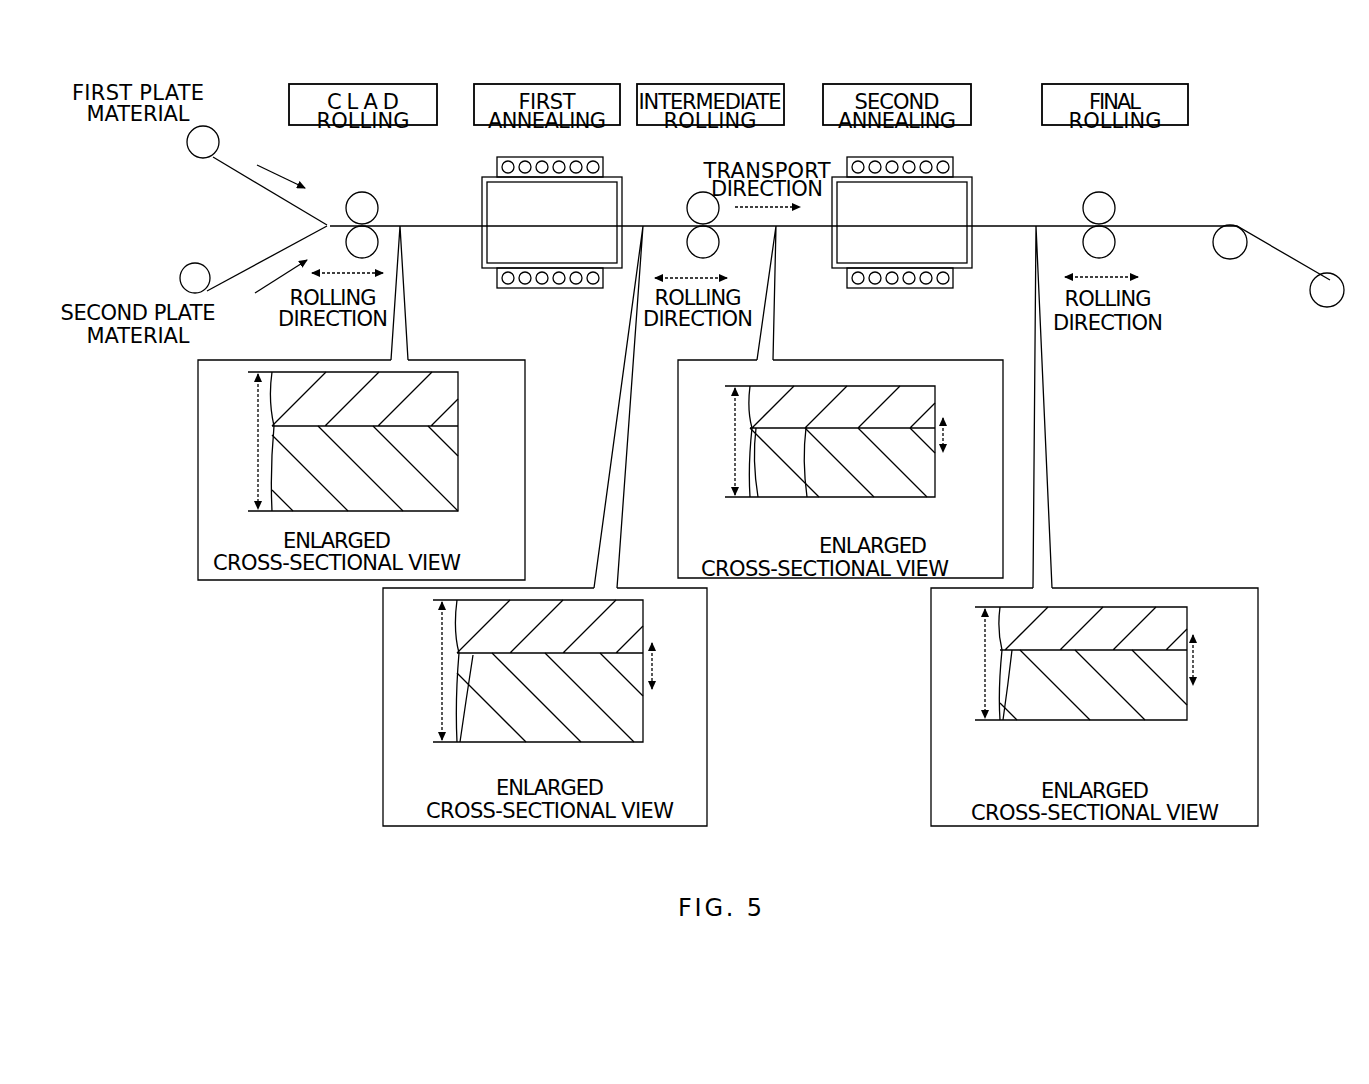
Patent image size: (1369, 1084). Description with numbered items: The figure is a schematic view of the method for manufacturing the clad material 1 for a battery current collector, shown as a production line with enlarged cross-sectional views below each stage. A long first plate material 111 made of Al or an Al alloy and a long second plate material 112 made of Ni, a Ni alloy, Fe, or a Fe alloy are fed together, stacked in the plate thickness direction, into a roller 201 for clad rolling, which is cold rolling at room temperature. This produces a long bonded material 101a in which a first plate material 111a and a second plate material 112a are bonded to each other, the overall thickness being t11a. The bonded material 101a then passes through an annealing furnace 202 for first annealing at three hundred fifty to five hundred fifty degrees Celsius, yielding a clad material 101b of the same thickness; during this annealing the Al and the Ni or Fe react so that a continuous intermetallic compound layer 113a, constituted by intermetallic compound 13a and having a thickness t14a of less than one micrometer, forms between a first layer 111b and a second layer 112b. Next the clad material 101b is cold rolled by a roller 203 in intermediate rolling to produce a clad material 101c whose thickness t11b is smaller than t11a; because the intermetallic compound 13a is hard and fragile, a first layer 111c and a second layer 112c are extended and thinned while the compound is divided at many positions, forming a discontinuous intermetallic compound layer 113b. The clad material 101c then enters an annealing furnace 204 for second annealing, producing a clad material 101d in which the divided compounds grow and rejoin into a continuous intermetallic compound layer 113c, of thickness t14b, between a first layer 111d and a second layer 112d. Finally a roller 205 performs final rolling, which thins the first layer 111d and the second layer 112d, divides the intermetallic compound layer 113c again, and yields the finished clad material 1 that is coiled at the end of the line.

The clad material 1 is at (1157, 227).
The first plate material 111 is at (243, 182).
The second plate material 112 is at (249, 272).
The roller 201 is at (355, 185).
The annealing furnace 202 is at (478, 184).
The roller 203 is at (697, 185).
The annealing furnace 204 is at (972, 167).
The roller 205 is at (1117, 187).
The bonded material 101a is at (383, 466).
The first plate material 111a is at (462, 405).
The second plate material 112a is at (461, 458).
The clad material 101b is at (548, 696).
The first layer 111b is at (647, 628).
The second layer 112b is at (647, 700).
The intermetallic compound layer 113a is at (461, 742).
The intermetallic compound 13a is at (758, 497).
The clad material 101c is at (863, 473).
The first layer 111c is at (938, 393).
The second layer 112c is at (938, 478).
The intermetallic compound layer 113b is at (807, 497).
The clad material 101d is at (1097, 696).
The first layer 111d is at (1190, 622).
The second layer 112d is at (1190, 698).
The intermetallic compound layer 113c is at (1003, 720).
The thickness of bonded material t11a is at (327, 557).
The thickness of clad material t11b is at (836, 553).
The thickness of intermetallic compound layer t14a is at (823, 553).
The thickness of intermetallic compound layer t14b is at (1217, 660).